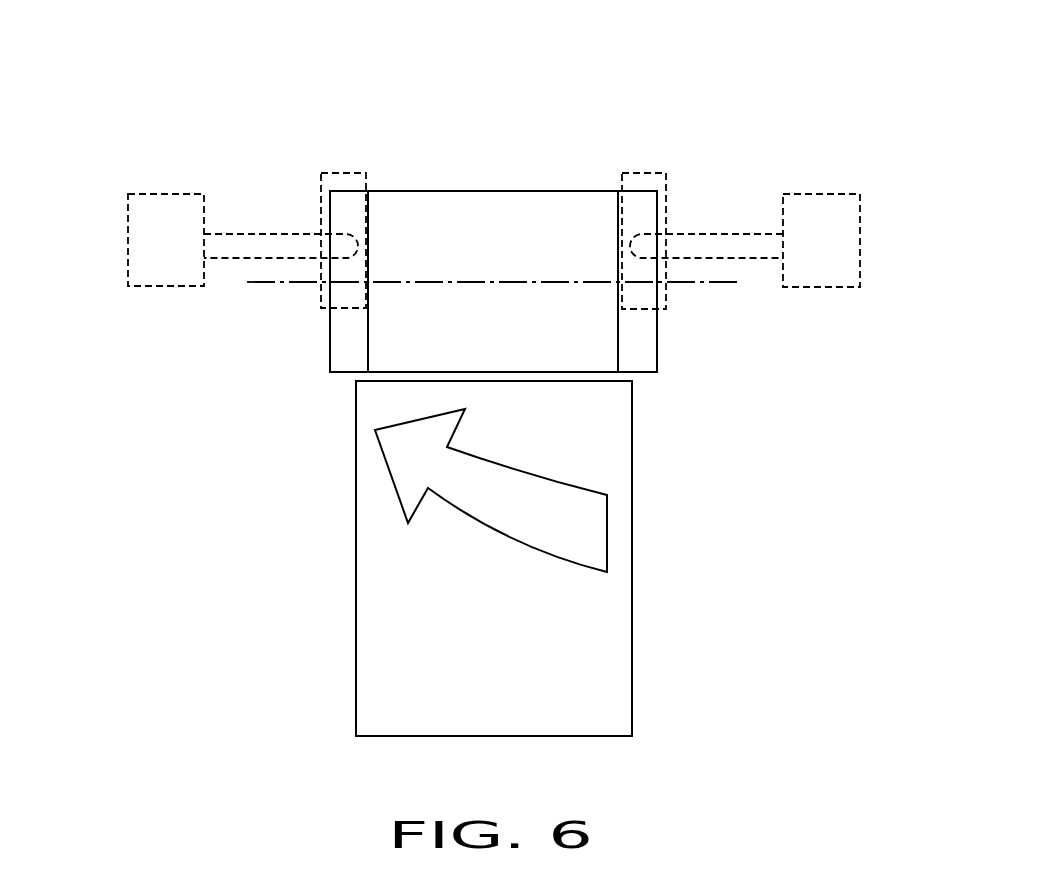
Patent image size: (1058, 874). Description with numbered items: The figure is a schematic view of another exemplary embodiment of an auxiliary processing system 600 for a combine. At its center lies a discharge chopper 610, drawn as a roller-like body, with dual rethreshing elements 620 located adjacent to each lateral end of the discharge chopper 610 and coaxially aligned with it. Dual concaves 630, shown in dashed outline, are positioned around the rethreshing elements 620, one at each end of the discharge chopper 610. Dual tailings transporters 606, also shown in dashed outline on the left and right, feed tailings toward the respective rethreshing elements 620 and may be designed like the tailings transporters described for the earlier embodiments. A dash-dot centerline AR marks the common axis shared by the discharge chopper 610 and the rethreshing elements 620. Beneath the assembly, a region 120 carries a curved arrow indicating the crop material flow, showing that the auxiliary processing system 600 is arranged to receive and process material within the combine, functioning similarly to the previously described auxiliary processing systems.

The auxiliary processing system 600 is at (641, 128).
The discharge chopper 610 is at (457, 190).
The rethreshing element 620 is at (330, 352).
The concave 630 is at (347, 172).
The tailings transporter 606 is at (128, 262).
The axis of rotation AR is at (290, 283).
The crop material flow region 120 is at (517, 665).